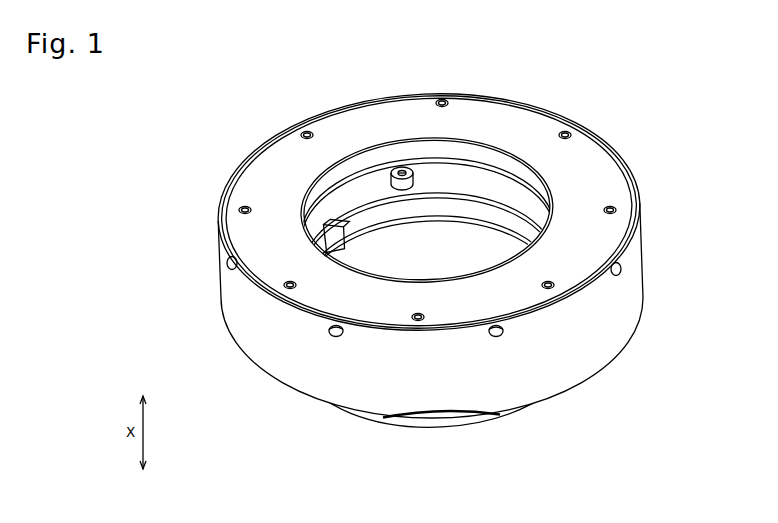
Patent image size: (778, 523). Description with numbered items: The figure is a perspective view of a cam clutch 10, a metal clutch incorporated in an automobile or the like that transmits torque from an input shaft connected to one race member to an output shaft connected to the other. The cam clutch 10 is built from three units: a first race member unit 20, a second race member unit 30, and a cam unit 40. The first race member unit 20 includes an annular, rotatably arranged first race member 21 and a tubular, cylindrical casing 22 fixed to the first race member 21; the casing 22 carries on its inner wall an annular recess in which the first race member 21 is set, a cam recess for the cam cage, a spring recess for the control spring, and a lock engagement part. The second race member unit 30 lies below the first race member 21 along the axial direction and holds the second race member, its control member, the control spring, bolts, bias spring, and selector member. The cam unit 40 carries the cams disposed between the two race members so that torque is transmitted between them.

The cam clutch 10 is at (190, 86).
The first race member unit 20 is at (718, 150).
The first race member 21 is at (607, 177).
The casing 22 is at (640, 260).
The second race member unit 30 is at (473, 420).
The cam unit 40 is at (414, 160).